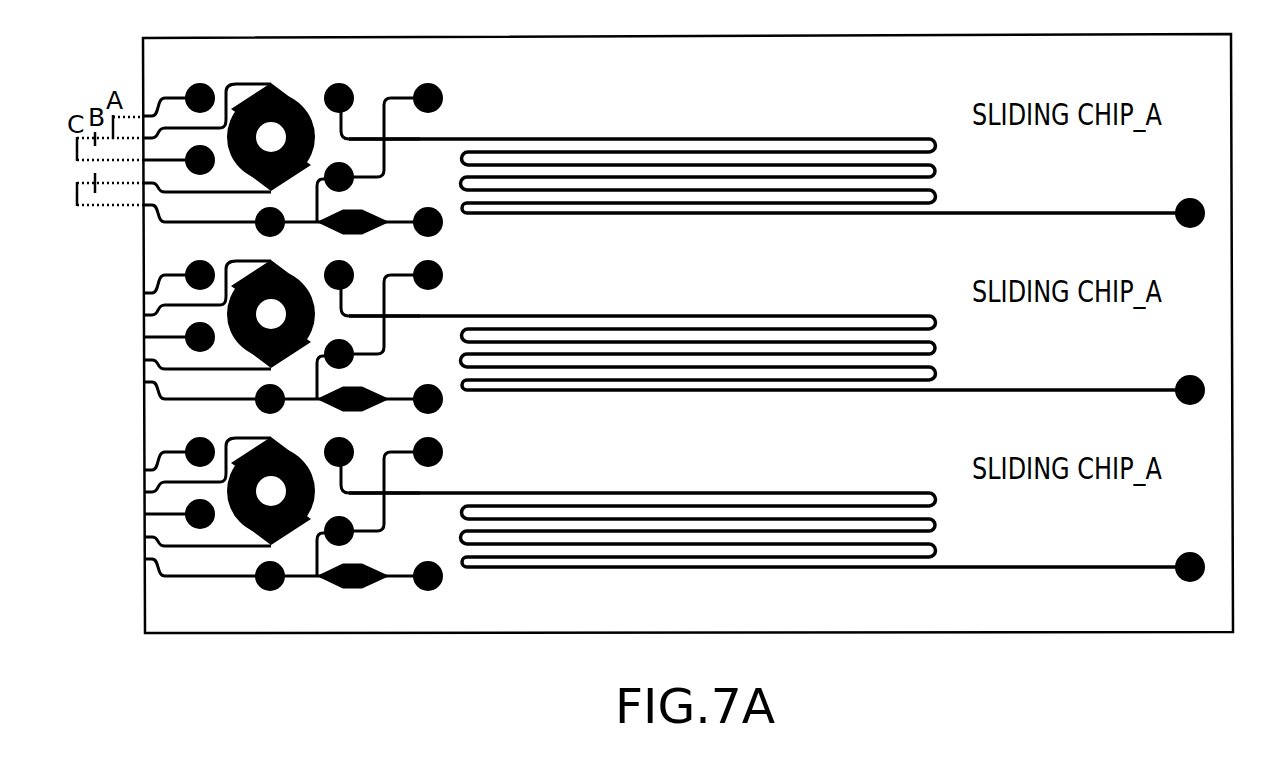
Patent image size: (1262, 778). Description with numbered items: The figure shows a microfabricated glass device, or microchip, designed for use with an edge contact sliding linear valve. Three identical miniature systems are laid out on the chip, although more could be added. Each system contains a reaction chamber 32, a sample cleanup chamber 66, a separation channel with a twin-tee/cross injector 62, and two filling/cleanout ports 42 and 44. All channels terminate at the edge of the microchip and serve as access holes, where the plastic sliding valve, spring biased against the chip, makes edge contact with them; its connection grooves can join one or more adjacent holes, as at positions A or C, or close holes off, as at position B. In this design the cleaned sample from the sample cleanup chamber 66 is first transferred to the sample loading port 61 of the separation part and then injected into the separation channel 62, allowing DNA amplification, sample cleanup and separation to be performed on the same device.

The reaction chamber 32 is at (292, 98).
The filling/cleanout port 42 is at (209, 89).
The filling/cleanout port 44 is at (190, 171).
The sample loading port 61 is at (352, 181).
The separation channel with twin-tee/cross injector 62 is at (688, 138).
The sample cleanup chamber 66 is at (353, 230).